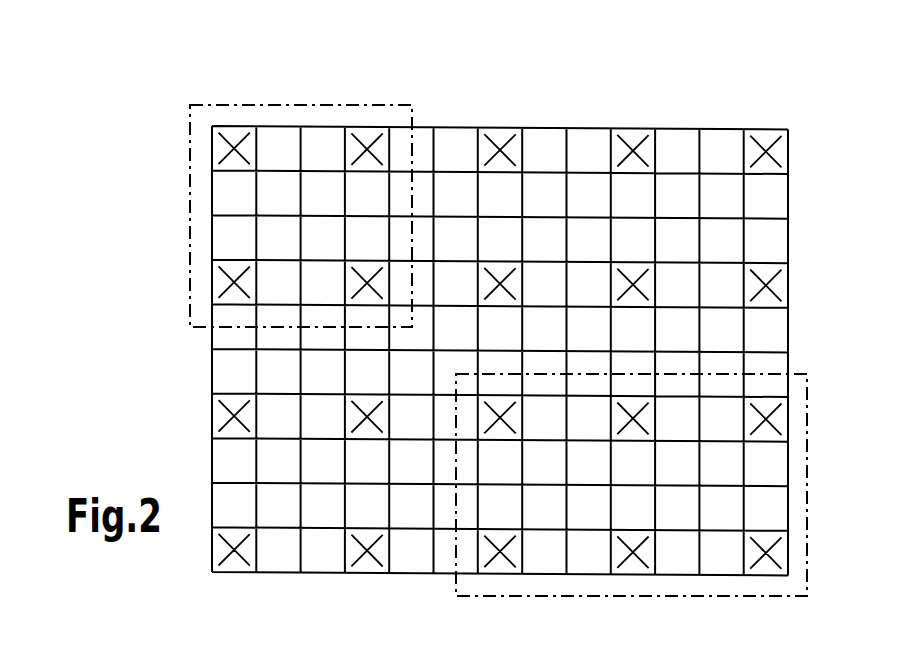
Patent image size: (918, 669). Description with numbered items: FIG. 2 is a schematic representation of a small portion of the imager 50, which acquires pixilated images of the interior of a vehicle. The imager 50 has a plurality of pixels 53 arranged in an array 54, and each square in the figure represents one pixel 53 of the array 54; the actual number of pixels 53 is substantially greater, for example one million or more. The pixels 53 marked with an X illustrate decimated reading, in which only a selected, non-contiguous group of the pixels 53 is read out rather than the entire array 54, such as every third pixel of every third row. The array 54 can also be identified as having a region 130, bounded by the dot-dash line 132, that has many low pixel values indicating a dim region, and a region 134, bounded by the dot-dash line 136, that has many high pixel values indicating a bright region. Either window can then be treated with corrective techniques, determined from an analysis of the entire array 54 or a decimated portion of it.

The imager 50 is at (145, 364).
The pixel 53 is at (233, 248).
The array 54 is at (169, 312).
The region 130 is at (342, 93).
The dot-dash line 132 is at (250, 103).
The region 134 is at (583, 587).
The dot-dash line 136 is at (642, 597).